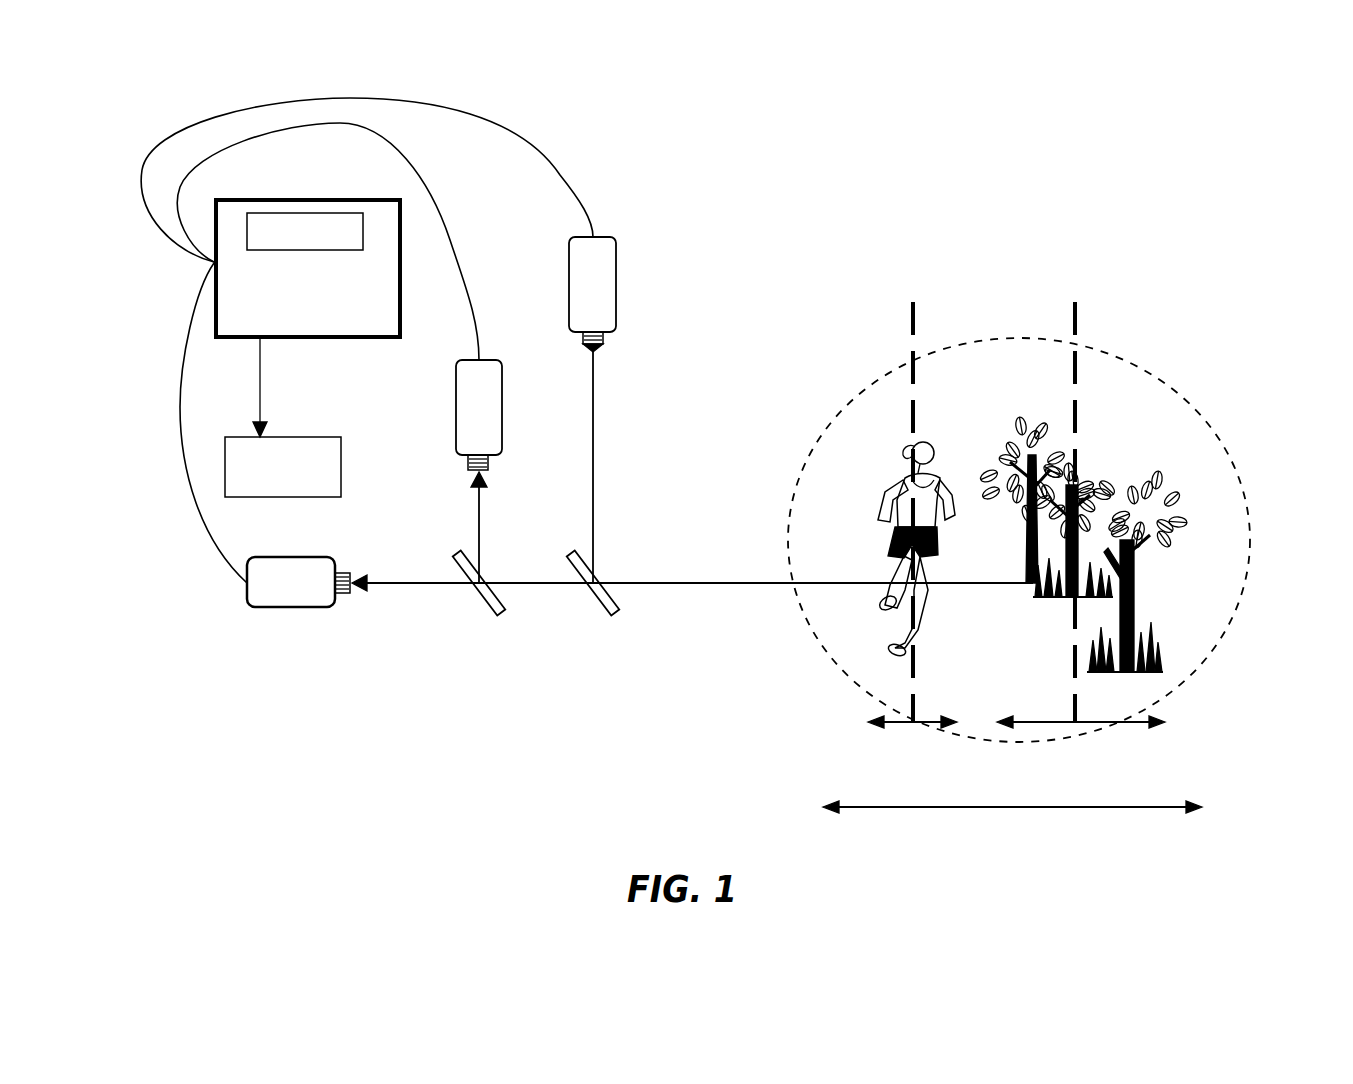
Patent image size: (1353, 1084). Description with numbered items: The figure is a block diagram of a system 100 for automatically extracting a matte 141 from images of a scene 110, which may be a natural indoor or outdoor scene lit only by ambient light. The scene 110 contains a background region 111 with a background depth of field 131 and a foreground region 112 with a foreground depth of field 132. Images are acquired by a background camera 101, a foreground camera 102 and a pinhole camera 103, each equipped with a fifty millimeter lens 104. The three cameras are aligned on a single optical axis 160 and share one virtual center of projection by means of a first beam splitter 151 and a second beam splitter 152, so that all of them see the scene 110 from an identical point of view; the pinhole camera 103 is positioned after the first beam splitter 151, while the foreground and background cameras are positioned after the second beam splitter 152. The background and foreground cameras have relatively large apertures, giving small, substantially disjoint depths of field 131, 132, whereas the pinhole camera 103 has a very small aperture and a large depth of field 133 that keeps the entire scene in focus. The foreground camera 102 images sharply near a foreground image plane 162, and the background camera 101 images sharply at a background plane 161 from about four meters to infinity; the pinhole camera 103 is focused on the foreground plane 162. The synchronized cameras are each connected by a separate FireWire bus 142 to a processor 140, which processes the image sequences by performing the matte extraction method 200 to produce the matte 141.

The system 100 is at (710, 855).
The background camera 101 is at (282, 608).
The foreground camera 102 is at (502, 458).
The pinhole camera 103 is at (616, 300).
The lens 104 is at (352, 592).
The scene 110 is at (1097, 348).
The background region 111 is at (1180, 540).
The foreground region 112 is at (937, 440).
The background depth of field 131 is at (1132, 733).
The foreground depth of field 132 is at (900, 722).
The depth of field 133 is at (1040, 807).
The processor 140 is at (292, 337).
The matte 141 is at (330, 497).
The FireWire bus 142 is at (213, 262).
The first beam splitter 151 is at (588, 602).
The second beam splitter 152 is at (480, 600).
The optical axis 160 is at (730, 583).
The background plane 161 is at (1070, 315).
The foreground image plane 162 is at (912, 325).
The method 200 is at (343, 210).